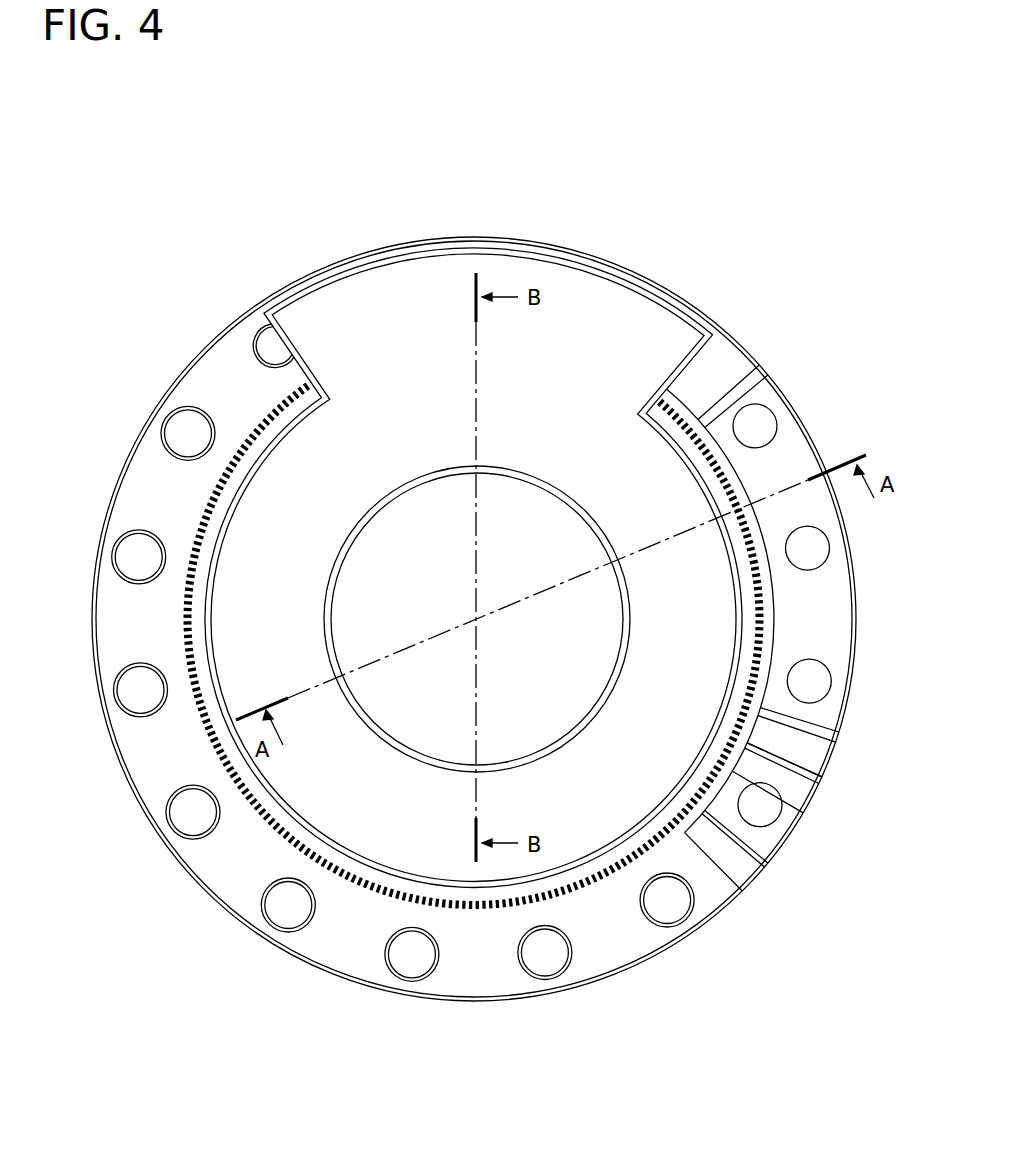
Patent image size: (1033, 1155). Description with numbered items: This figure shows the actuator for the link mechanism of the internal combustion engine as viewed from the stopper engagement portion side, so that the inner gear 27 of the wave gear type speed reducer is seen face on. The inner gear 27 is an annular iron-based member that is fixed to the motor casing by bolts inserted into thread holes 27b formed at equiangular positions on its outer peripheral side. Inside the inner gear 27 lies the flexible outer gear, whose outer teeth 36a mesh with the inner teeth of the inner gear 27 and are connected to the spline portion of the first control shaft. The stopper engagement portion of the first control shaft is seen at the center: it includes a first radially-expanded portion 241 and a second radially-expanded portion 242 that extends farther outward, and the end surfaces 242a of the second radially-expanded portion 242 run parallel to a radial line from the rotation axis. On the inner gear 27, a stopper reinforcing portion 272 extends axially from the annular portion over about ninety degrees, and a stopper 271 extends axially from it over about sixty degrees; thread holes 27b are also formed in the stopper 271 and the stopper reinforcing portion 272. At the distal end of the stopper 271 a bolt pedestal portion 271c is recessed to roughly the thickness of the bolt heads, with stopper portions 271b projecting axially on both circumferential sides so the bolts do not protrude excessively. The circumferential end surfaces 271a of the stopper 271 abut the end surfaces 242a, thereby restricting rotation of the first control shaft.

The inner gear 27 is at (610, 263).
The thread holes 27b is at (552, 960).
The outer teeth 36a is at (207, 513).
The first radially-expanded portion 241 is at (300, 462).
The second radially-expanded portion 242 is at (400, 275).
The end surfaces 242a is at (258, 334).
The stopper 271 is at (746, 345).
The circumferential end surfaces 271a is at (732, 392).
The stopper portions 271b is at (812, 748).
The bolt pedestal portion 271c is at (835, 582).
The stopper reinforcing portion 272 is at (783, 830).